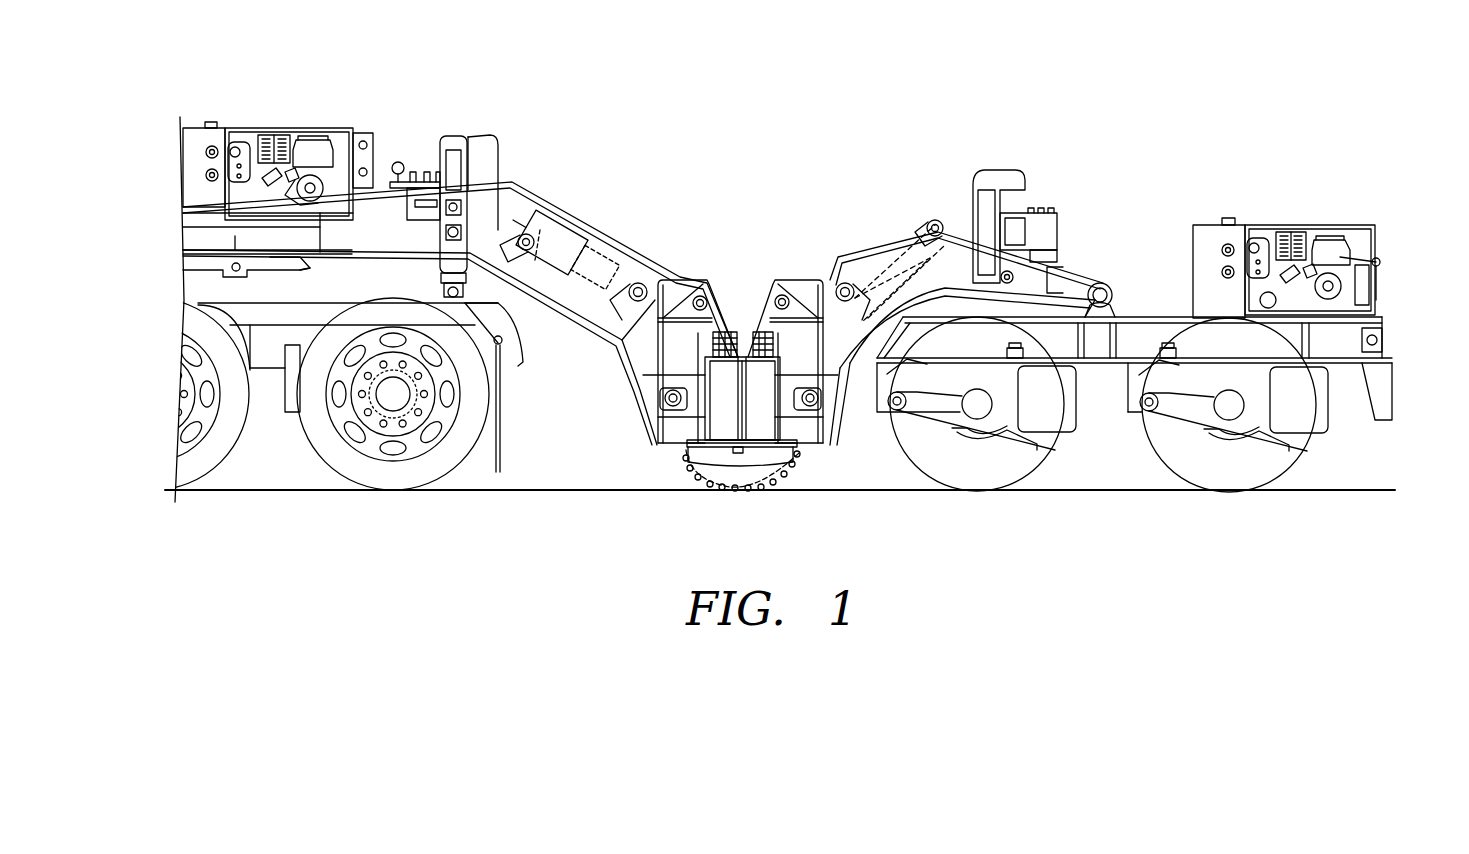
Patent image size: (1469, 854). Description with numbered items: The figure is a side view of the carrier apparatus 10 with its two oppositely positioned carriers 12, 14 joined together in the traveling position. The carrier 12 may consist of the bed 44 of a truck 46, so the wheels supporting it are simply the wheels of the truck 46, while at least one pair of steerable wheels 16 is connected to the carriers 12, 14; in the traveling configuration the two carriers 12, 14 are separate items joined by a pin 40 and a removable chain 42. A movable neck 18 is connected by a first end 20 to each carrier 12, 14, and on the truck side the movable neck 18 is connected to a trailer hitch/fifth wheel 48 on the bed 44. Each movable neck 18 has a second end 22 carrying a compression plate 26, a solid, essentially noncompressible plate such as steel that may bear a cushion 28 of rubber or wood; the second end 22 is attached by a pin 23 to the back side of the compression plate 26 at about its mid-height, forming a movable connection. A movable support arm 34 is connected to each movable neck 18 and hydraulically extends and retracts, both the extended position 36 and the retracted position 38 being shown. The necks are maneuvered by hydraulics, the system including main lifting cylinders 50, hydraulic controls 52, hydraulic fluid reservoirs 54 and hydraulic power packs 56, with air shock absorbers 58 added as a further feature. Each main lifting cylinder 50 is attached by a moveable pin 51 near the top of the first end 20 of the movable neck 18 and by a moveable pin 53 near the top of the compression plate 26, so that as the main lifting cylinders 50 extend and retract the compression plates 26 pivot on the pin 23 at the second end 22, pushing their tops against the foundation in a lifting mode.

The carrier apparatus 10 is at (812, 88).
The carrier 12 is at (297, 302).
The carrier 14 is at (1147, 317).
The steerable wheels 16 is at (180, 477).
The movable neck 18 is at (560, 200).
The first end 20 is at (1120, 283).
The second end 22 is at (658, 443).
The pin 23 is at (655, 400).
The compression plate 26 is at (754, 420).
The cushion 28 is at (743, 347).
The movable support arm 34 is at (453, 163).
The extended position 36 is at (441, 280).
The retracted position 38 is at (1057, 268).
The pin 40 is at (738, 452).
The removable chain 42 is at (678, 475).
The bed 44 is at (184, 283).
The truck 46 is at (263, 352).
The trailer hitch/fifth wheel 48 is at (300, 266).
The main lifting cylinders 50 is at (597, 230).
The moveable pin 51 is at (527, 234).
The hydraulic controls 52 is at (407, 162).
The moveable pin 53 is at (655, 287).
The hydraulic fluid reservoirs 54 is at (197, 140).
The hydraulic power packs 56 is at (270, 135).
The air shock absorbers 58 is at (1070, 423).